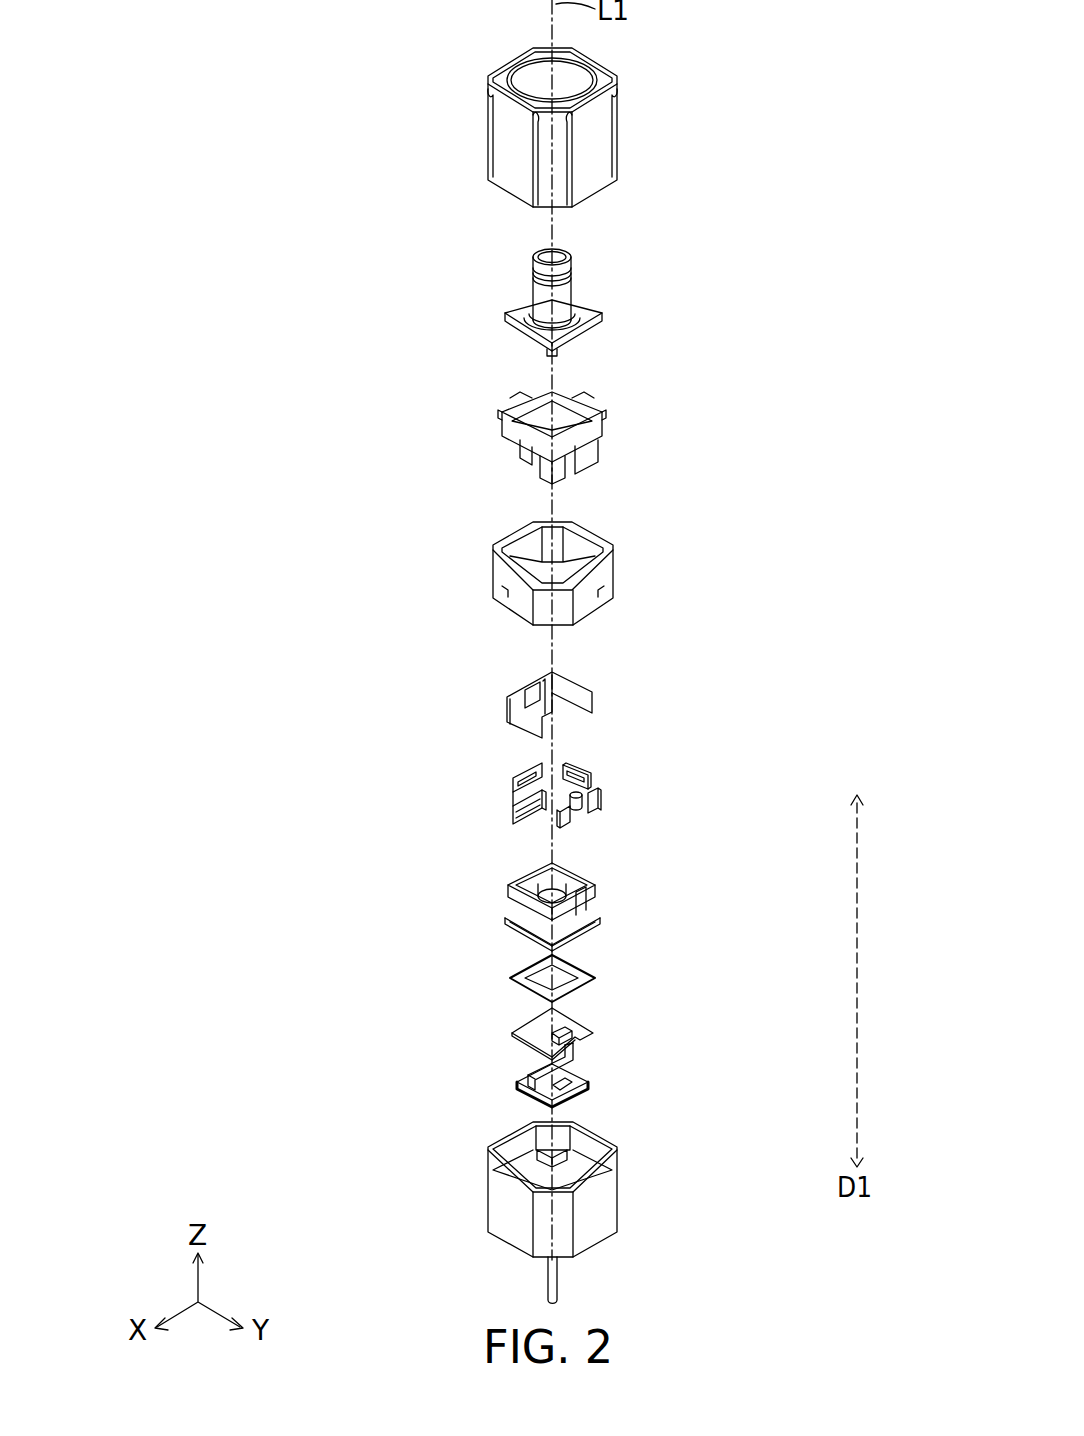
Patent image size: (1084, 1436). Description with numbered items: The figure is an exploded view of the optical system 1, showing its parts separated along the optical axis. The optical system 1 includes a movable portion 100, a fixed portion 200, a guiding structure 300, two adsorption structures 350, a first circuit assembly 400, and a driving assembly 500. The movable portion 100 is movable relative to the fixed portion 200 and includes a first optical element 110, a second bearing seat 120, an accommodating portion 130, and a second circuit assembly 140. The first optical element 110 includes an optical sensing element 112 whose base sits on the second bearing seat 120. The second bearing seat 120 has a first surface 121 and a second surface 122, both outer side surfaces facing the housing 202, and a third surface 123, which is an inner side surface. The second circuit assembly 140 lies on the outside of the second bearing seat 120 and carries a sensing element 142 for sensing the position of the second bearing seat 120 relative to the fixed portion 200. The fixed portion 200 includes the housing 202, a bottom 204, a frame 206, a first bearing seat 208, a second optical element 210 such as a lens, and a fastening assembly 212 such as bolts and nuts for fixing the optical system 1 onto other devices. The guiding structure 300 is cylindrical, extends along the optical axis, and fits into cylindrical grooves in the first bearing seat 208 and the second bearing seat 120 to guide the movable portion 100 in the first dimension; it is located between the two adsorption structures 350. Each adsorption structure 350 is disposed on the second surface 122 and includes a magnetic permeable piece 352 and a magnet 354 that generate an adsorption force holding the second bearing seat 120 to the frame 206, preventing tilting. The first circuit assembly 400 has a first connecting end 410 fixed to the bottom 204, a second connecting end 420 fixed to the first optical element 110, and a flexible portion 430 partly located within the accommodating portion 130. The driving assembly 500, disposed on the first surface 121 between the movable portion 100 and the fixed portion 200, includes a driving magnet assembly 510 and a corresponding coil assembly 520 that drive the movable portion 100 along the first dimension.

The optical system 1 is at (745, 60).
The movable portion 100 is at (224, 36).
The first optical element 110 is at (496, 983).
The optical sensing element 112 is at (580, 972).
The second bearing seat 120 is at (486, 912).
The first surface 121 is at (585, 880).
The second surface 122 is at (600, 905).
The third surface 123 is at (590, 922).
The accommodating portion 130 is at (530, 882).
The second circuit assembly 140 is at (508, 712).
The sensing element 142 is at (545, 770).
The fixed portion 200 is at (224, 192).
The housing 202 is at (650, 143).
The bottom 204 is at (652, 1205).
The frame 206 is at (652, 590).
The first bearing seat 208 is at (488, 427).
The second optical element 210 is at (612, 292).
The fastening assembly 212 is at (252, 377).
The guiding structure 300 is at (566, 822).
The adsorption structures 350 is at (703, 775).
The magnetic permeable piece 352 is at (580, 808).
The magnet 354 is at (602, 798).
The first circuit assembly 400 is at (510, 1060).
The first connecting end 410 is at (575, 1092).
The second connecting end 420 is at (568, 1042).
The flexible portion 430 is at (572, 1058).
The driving assembly 500 is at (412, 766).
The driving magnet assembly 510 is at (510, 810).
The coil assembly 520 is at (510, 770).